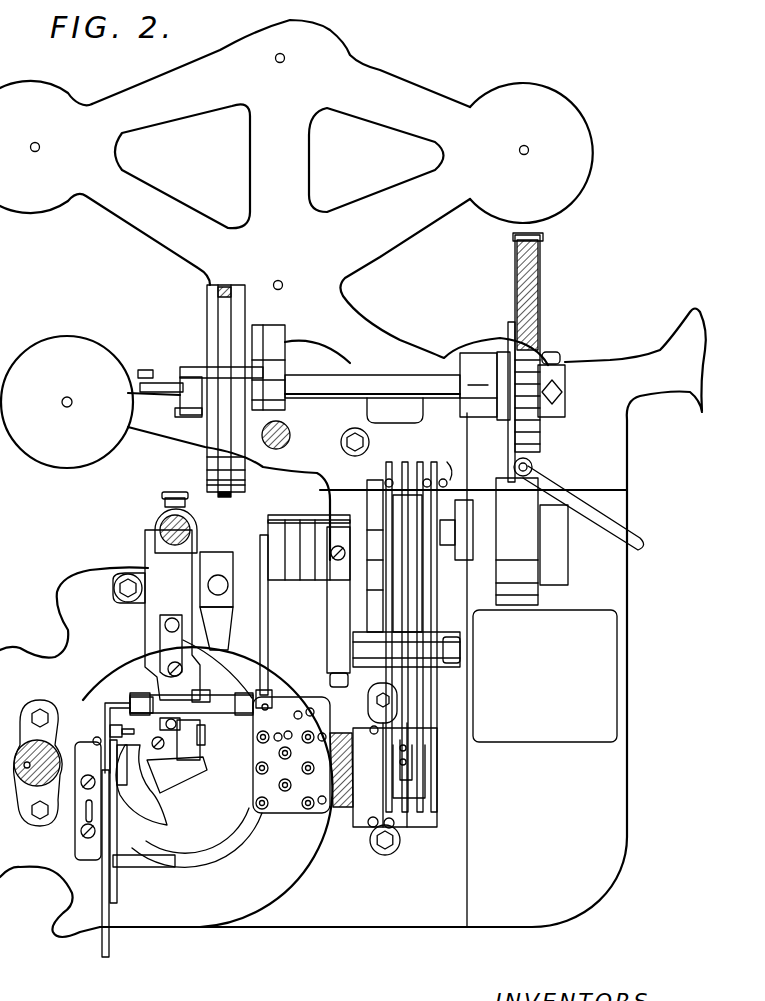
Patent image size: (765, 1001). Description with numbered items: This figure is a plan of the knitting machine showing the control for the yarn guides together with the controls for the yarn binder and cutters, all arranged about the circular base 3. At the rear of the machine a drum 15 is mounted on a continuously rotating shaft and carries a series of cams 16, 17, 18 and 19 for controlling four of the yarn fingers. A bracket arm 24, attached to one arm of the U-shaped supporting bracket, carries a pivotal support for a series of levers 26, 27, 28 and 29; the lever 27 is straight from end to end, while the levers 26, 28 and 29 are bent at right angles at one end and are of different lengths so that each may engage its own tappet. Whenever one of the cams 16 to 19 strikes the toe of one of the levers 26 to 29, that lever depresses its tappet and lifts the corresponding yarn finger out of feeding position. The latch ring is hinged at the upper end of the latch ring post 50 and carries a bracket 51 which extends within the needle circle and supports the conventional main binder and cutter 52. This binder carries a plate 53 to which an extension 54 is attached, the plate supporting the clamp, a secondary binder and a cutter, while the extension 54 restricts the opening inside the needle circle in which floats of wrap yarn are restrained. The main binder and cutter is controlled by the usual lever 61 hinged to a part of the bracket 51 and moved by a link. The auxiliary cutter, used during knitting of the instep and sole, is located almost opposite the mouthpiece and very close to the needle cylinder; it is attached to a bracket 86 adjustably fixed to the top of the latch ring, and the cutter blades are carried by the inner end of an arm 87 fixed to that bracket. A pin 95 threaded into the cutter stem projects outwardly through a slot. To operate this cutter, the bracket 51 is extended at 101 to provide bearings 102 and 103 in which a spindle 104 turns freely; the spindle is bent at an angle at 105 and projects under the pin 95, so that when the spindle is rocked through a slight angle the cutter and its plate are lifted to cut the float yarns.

The circular base 3 is at (353, 478).
The drum 15 is at (445, 598).
The cam 16 is at (388, 440).
The cam 17 is at (406, 462).
The cam 18 is at (424, 462).
The cam 19 is at (435, 462).
The bracket arm 24 is at (330, 618).
The lever 26 is at (390, 787).
The lever 27 is at (403, 695).
The lever 28 is at (420, 752).
The lever 29 is at (430, 793).
The latch ring post 50 is at (193, 533).
The bracket 51 is at (200, 697).
The binder and cutter 52 is at (173, 748).
The plate 53 is at (200, 748).
The extension 54 is at (141, 785).
The lever 61 is at (147, 620).
The bracket 86 is at (83, 803).
The arm 87 is at (113, 857).
The pin 95 is at (107, 760).
The extension of bracket 101 is at (207, 697).
The bearing 102 is at (253, 715).
The bearing 103 is at (148, 700).
The spindle 104 is at (117, 702).
The bent portion of spindle 105 is at (100, 723).